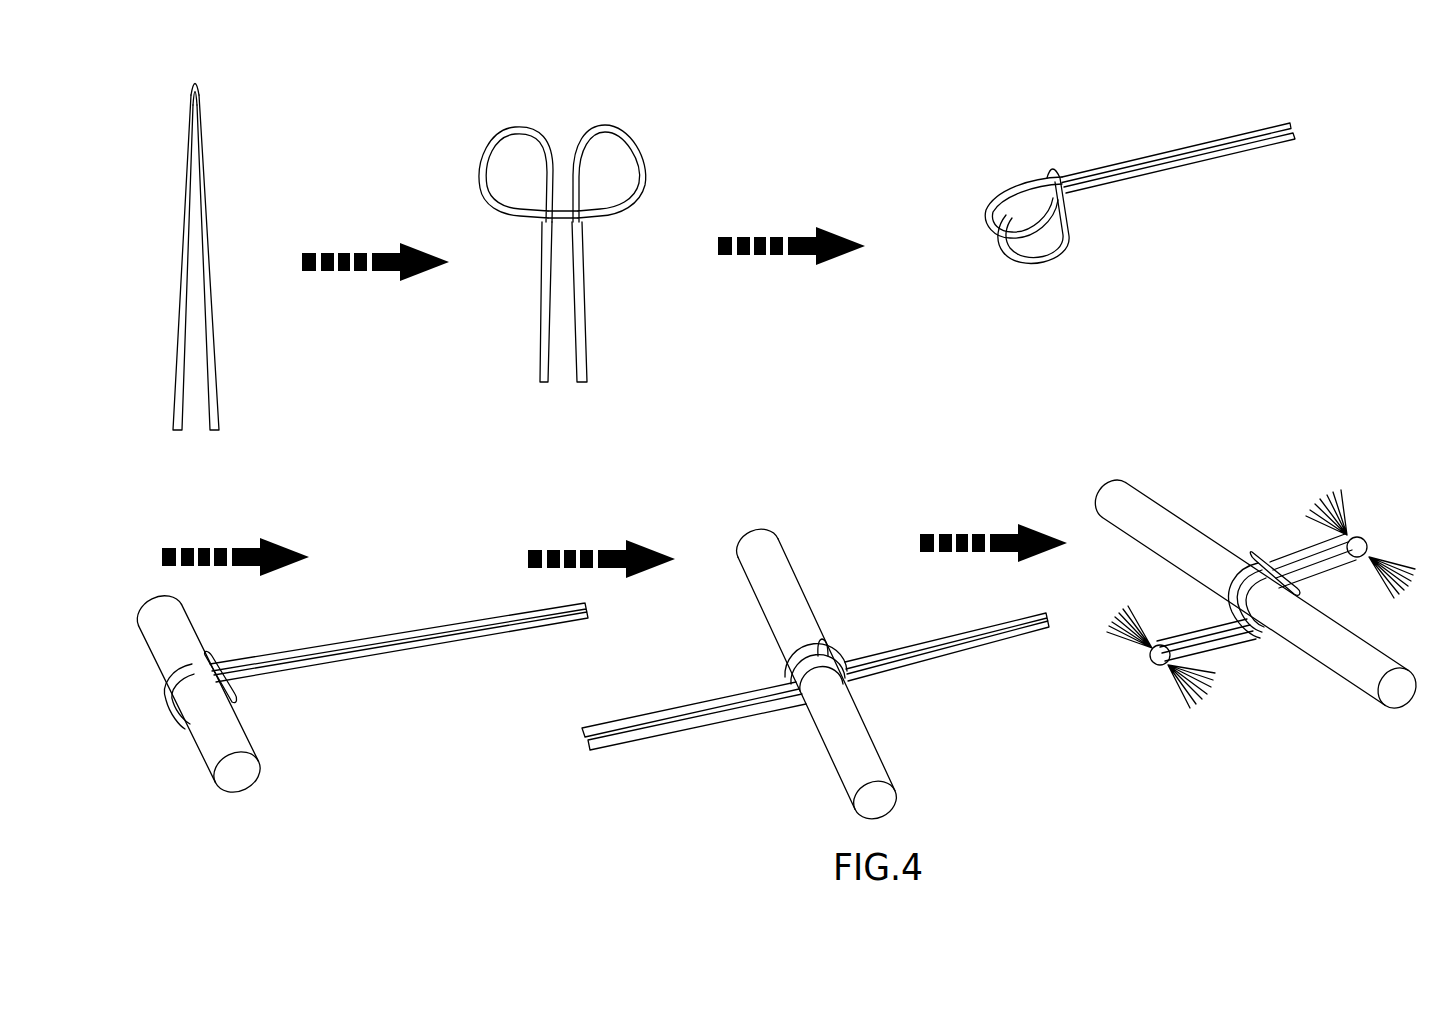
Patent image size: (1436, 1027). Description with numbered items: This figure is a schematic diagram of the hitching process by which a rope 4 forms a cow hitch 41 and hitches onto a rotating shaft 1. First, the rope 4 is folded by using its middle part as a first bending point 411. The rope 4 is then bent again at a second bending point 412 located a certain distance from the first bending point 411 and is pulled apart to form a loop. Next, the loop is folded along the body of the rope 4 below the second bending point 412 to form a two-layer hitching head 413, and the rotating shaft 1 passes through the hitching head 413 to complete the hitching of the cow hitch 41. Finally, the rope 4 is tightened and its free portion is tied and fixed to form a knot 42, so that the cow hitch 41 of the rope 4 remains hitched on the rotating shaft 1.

The rotating shaft 1 is at (220, 742).
The rope 4 is at (769, 399).
The cow hitch 41 is at (158, 718).
The knot 42 is at (1357, 542).
The first bending point 411 is at (196, 84).
The second bending point 412 is at (515, 127).
The hitching head 413 is at (1072, 242).